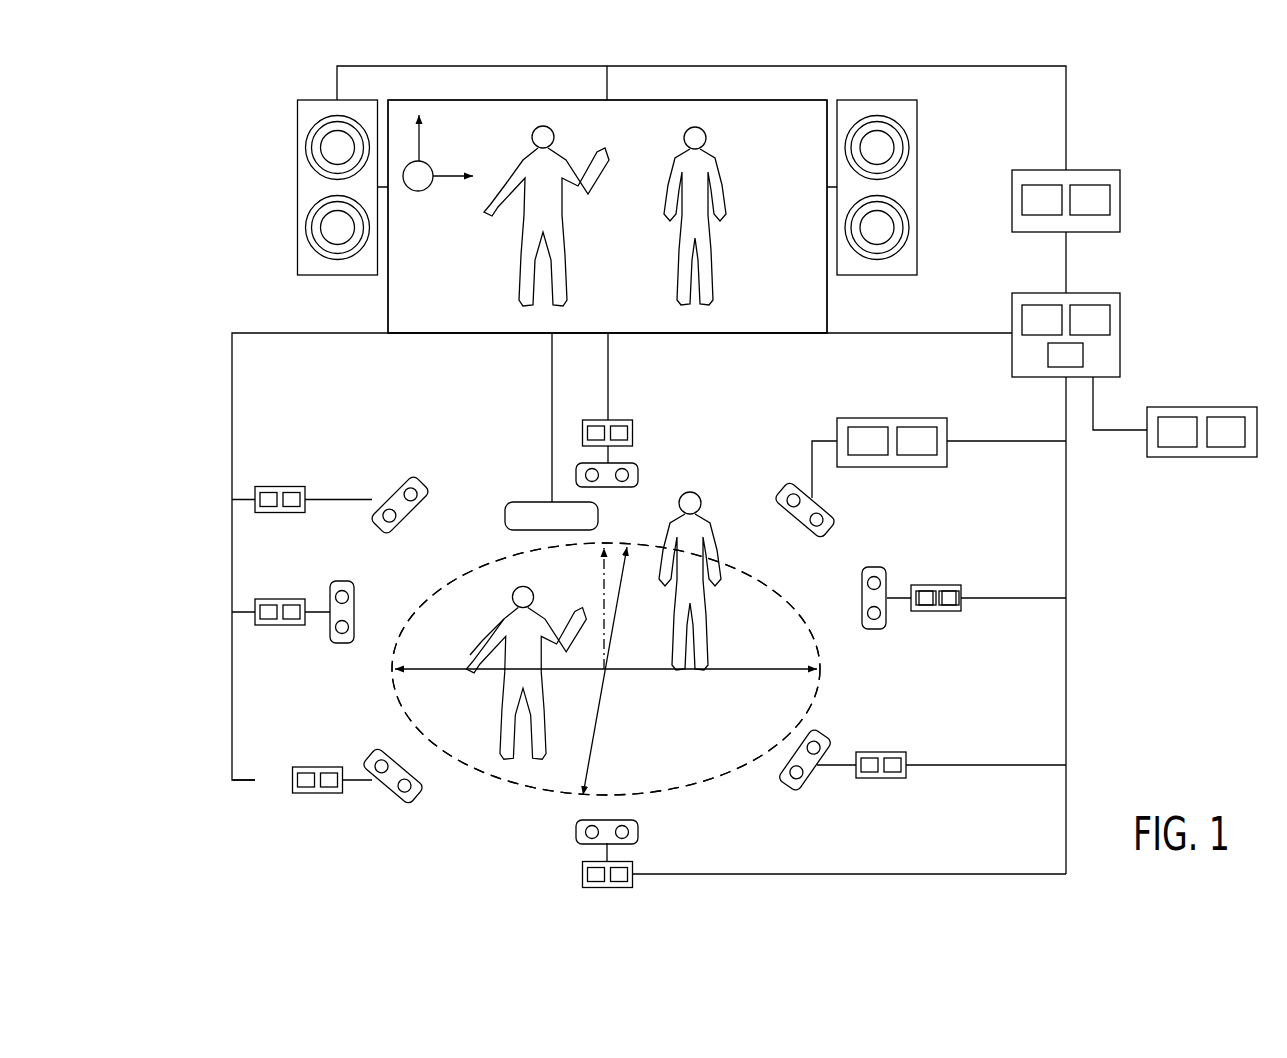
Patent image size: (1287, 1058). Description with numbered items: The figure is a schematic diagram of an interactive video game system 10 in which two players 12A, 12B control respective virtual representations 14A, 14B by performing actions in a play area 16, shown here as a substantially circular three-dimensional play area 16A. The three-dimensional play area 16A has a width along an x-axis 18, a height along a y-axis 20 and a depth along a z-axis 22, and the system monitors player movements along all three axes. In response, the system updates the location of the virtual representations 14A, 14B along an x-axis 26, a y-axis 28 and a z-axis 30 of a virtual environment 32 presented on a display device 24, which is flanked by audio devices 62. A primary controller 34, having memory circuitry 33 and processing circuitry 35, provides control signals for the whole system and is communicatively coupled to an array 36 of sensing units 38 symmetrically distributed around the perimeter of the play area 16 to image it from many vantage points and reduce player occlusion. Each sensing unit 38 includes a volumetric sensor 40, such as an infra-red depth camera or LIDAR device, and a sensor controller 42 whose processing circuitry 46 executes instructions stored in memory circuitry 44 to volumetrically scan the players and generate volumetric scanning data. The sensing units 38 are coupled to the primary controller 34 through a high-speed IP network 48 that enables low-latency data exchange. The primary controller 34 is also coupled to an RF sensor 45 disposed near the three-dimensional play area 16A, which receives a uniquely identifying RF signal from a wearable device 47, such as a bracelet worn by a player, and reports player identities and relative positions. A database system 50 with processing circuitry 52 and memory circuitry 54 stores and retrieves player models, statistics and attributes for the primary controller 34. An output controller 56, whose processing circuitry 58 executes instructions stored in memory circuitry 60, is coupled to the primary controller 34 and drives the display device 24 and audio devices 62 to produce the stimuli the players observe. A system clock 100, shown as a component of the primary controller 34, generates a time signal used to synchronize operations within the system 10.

The interactive video game system 10 is at (1110, 91).
The player 12A is at (523, 766).
The player 12B is at (731, 513).
The virtual representation 14A is at (572, 138).
The virtual representation 14B is at (641, 229).
The play area 16 is at (441, 571).
The 3D play area 16A is at (606, 669).
The x-axis 18 is at (657, 672).
The y-axis 20 is at (602, 595).
The z-axis 22 is at (598, 716).
The display device 24 is at (803, 100).
The x-axis 26 is at (447, 174).
The y-axis 28 is at (420, 151).
The z-axis 30 is at (405, 190).
The virtual environment 32 is at (746, 150).
The memory circuitry 33 is at (1040, 305).
The primary controller 34 is at (1121, 344).
The processing circuitry 35 is at (1085, 305).
The array 36 is at (415, 437).
The sensing unit 38 is at (221, 487).
The volumetric sensor 40 is at (843, 506).
The sensor controller 42 is at (953, 479).
The memory circuitry 44 is at (868, 427).
The RF sensor 45 is at (504, 516).
The processing circuitry 46 is at (918, 427).
The wearable device 47 is at (494, 633).
The high-speed IP network 48 is at (1067, 546).
The database system 50 is at (1200, 457).
The processing circuitry 52 is at (1228, 417).
The memory circuitry 54 is at (1176, 417).
The output controller 56 is at (1121, 206).
The processing circuitry 58 is at (1085, 185).
The memory circuitry 60 is at (1040, 185).
The audio devices 62 is at (297, 190).
The system clock 100 is at (1047, 356).